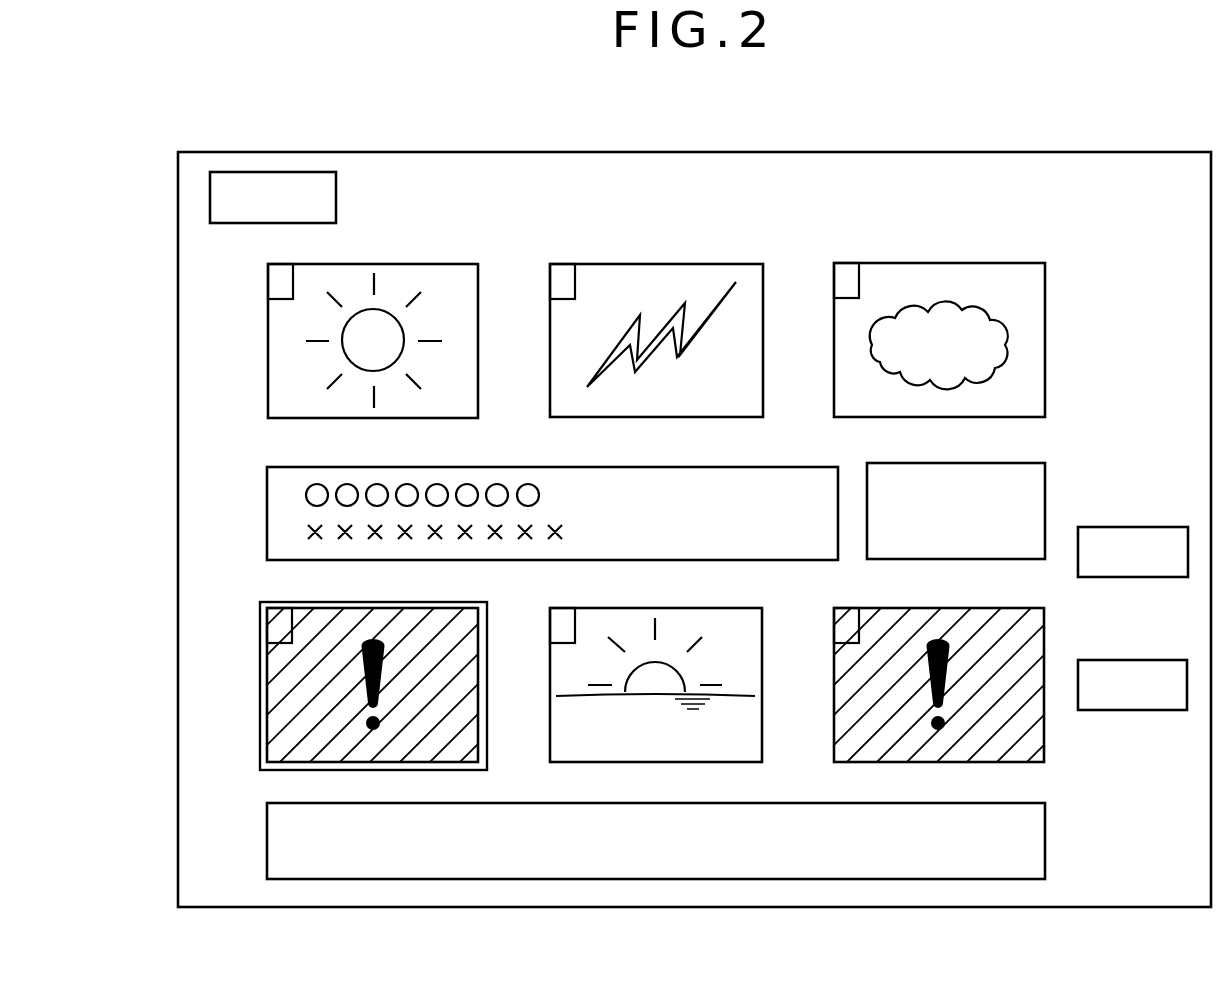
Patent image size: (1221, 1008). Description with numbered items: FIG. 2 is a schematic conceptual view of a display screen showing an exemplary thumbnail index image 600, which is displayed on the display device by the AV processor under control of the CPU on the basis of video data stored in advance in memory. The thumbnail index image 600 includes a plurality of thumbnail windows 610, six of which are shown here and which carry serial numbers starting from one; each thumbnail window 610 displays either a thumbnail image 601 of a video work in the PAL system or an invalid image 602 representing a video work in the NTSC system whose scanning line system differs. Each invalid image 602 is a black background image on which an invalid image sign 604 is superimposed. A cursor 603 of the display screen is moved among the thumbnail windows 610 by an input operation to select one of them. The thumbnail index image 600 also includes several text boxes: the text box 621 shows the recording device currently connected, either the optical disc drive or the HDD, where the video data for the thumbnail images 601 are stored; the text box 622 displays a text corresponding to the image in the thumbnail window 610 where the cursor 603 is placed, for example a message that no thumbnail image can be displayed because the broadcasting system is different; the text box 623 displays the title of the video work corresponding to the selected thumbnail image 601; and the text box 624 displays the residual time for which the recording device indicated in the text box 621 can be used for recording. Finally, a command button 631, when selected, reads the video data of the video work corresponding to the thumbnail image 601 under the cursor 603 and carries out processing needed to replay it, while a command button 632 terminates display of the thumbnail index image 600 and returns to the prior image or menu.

The thumbnail index image 600 is at (1053, 152).
The thumbnail image 601 is at (445, 288).
The invalid image 602 is at (450, 748).
The cursor 603 is at (487, 617).
The invalid image sign 604 is at (365, 685).
The thumbnail window 610 is at (411, 264).
The text box 621 is at (272, 172).
The text box 622 is at (1045, 837).
The text box 623 is at (267, 496).
The text box 624 is at (937, 463).
The command button 631 is at (1138, 527).
The command button 632 is at (1133, 710).